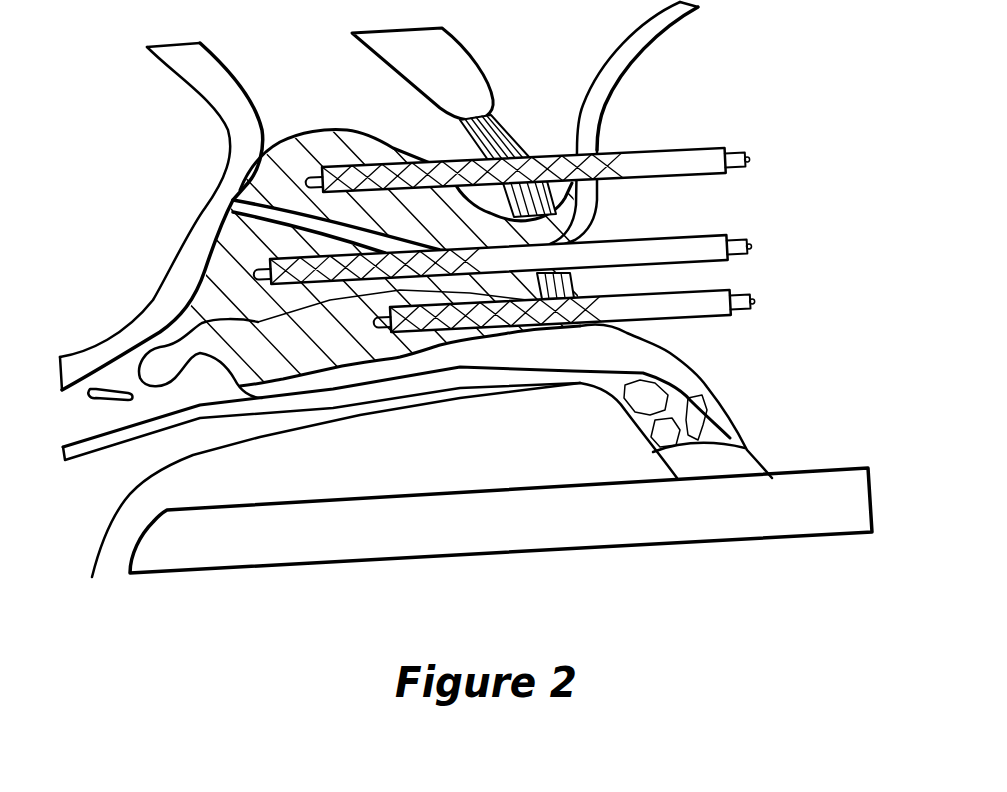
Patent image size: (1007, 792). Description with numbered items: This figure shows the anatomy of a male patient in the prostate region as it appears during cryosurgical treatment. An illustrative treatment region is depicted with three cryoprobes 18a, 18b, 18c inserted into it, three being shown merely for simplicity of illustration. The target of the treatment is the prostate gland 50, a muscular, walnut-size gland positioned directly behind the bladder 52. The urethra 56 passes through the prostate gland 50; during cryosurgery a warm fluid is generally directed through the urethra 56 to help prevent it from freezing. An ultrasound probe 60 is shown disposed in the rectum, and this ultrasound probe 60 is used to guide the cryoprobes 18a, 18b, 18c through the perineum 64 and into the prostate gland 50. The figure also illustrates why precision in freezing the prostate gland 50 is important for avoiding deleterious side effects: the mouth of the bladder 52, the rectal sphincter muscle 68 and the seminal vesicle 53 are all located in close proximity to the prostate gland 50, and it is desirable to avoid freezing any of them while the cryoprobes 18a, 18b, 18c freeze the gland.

The cryoprobe 18a is at (750, 158).
The cryoprobe 18b is at (757, 248).
The cryoprobe 18c is at (757, 300).
The prostate gland 50 is at (320, 143).
The bladder 52 is at (150, 155).
The seminal vesicle 53 is at (120, 373).
The urethra 56 is at (625, 62).
The ultrasound probe 60 is at (207, 557).
The perineum 64 is at (505, 138).
The rectal sphincter muscle 68 is at (567, 363).